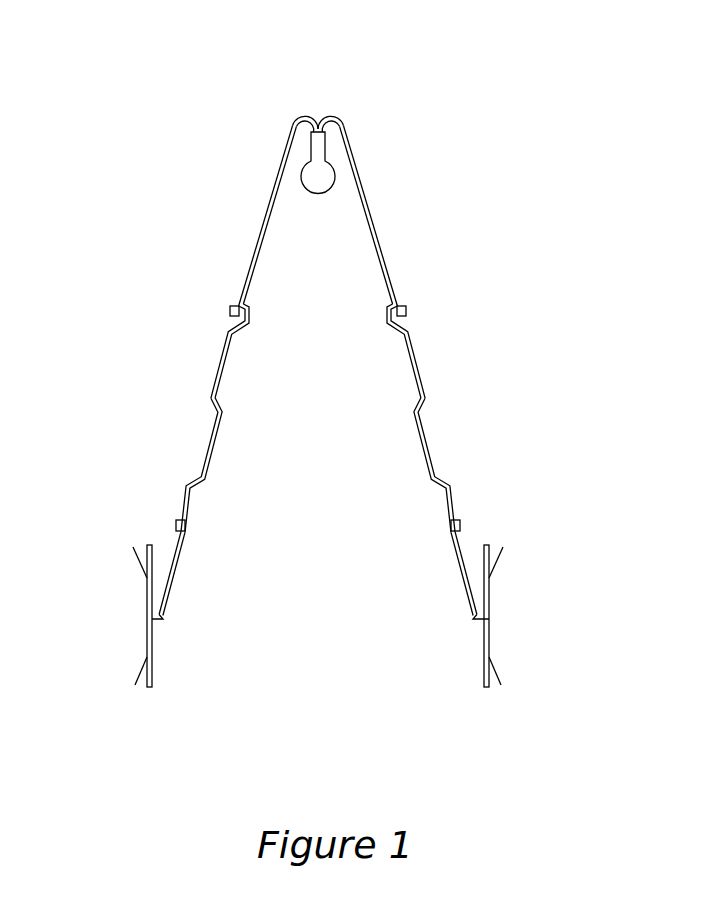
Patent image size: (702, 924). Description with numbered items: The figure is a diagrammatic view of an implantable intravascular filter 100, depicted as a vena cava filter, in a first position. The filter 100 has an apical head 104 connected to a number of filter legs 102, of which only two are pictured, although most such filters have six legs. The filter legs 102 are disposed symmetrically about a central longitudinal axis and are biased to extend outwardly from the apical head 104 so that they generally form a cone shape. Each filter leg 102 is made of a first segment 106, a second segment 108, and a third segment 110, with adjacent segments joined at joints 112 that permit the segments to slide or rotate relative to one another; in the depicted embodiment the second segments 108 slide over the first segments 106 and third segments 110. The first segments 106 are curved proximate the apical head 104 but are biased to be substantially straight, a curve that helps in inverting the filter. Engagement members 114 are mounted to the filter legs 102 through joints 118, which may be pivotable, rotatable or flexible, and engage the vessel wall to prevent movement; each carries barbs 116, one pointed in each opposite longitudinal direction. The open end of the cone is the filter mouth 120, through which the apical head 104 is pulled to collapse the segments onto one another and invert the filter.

The filter 100 is at (246, 84).
The filter legs 102 is at (218, 370).
The apical head 104 is at (328, 168).
The first segment 106 is at (263, 214).
The second segment 108 is at (208, 445).
The third segment 110 is at (173, 582).
The joints 112 is at (230, 310).
The engagement members 114 is at (147, 635).
The barbs 116 is at (141, 566).
The joints 118 is at (162, 624).
The filter mouth 120 is at (325, 655).